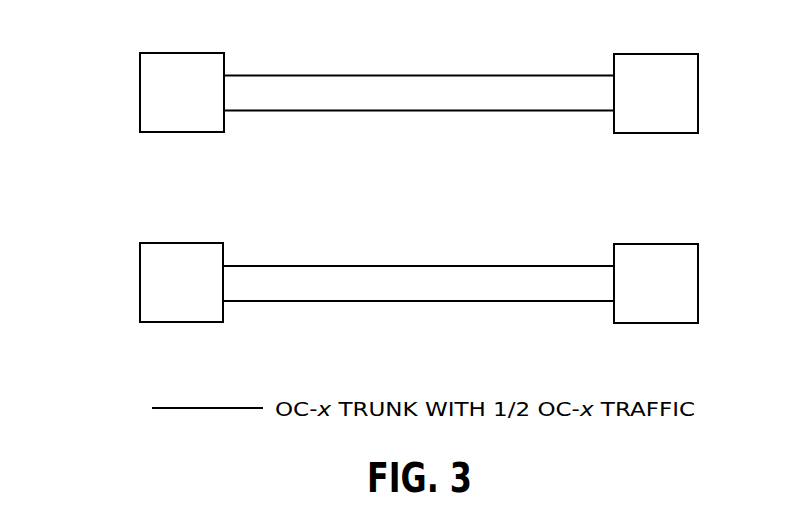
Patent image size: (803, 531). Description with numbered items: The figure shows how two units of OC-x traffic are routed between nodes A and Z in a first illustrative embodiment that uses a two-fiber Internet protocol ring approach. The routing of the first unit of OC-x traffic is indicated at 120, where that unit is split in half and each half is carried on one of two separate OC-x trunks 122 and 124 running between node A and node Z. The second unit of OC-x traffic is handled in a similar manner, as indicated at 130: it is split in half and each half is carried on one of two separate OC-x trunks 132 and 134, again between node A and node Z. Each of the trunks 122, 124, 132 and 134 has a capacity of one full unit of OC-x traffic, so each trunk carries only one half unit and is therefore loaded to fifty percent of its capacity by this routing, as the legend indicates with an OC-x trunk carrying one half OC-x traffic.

The routing of the first unit of OC-x traffic 120 is at (107, 11).
The OC-x trunk 122 is at (340, 75).
The OC-x trunk 124 is at (332, 112).
The routing of the second unit of OC-x traffic 130 is at (107, 200).
The OC-x trunk 132 is at (340, 265).
The OC-x trunk 134 is at (332, 302).